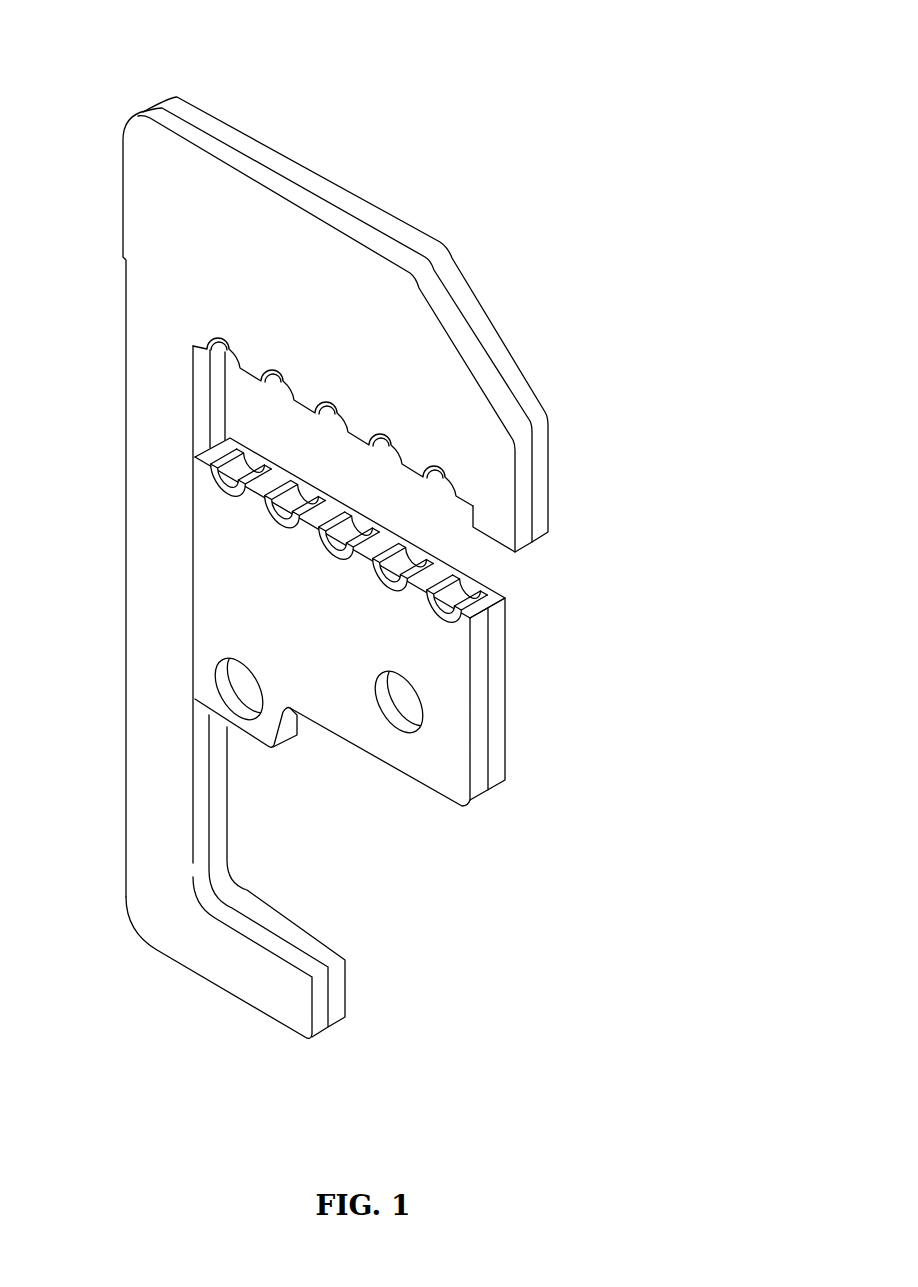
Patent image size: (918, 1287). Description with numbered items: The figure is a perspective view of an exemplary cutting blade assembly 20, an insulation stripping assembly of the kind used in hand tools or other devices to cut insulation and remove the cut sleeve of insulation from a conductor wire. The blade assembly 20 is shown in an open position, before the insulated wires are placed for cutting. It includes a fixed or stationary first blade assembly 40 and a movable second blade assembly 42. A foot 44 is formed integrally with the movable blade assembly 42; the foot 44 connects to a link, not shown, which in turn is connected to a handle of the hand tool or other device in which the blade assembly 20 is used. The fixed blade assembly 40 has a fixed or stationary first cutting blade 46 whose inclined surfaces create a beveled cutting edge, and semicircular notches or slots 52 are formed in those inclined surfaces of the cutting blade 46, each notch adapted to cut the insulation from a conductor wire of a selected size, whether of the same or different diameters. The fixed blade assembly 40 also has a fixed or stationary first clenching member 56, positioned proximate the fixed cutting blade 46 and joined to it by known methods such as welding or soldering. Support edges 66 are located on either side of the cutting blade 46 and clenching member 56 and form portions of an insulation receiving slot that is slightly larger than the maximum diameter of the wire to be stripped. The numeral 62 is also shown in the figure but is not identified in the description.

The cutting blade assembly 20 is at (381, 534).
The movable second blade assembly 42 is at (391, 497).
The foot 44 is at (233, 973).
The semicircular notches 52 is at (300, 478).
The fixed first blade assembly 40 is at (372, 663).
The fixed first cutting blade 46 is at (497, 685).
The fixed first clenching member 56 is at (470, 707).
The channels 62 is at (385, 580).
The support edges 66 is at (300, 515).